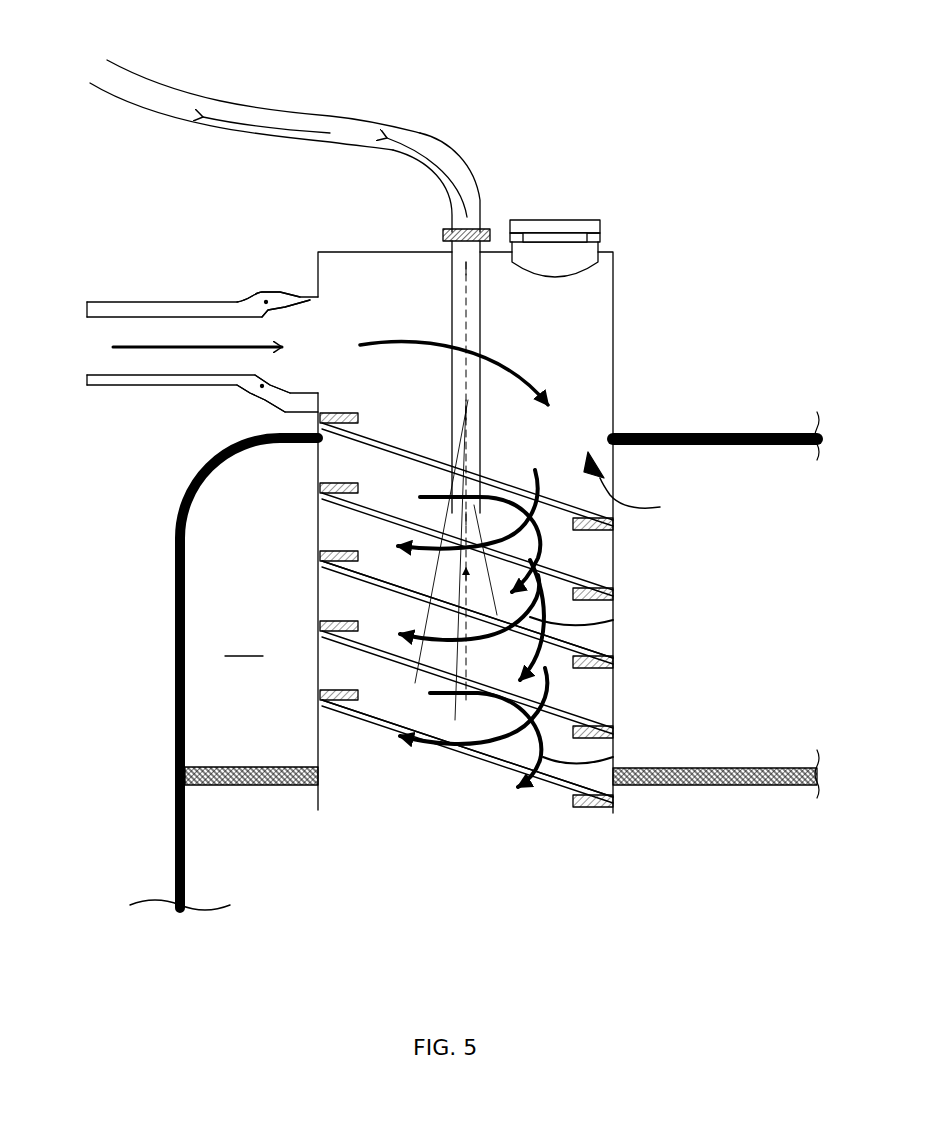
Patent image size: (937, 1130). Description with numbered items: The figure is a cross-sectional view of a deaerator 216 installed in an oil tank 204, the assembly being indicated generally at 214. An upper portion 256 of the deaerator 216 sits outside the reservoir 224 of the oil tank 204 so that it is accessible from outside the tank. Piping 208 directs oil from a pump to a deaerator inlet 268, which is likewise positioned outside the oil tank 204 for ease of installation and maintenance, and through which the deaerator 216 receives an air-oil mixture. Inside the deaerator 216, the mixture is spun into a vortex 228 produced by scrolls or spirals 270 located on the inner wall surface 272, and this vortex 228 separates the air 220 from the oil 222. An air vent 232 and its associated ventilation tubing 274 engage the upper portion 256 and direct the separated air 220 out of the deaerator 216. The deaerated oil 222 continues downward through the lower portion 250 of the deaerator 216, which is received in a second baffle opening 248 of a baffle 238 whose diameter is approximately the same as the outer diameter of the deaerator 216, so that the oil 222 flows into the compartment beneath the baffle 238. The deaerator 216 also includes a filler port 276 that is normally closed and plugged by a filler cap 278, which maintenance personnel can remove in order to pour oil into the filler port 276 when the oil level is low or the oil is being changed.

The fluid separation system 214 is at (706, 70).
The ventilation tubing 274 is at (293, 110).
The air 220 is at (430, 150).
The air vent 232 is at (447, 240).
The filler cap 278 is at (527, 220).
The filler port 276 is at (600, 240).
The deaerator inlet 268 is at (303, 297).
The piping 208 is at (120, 305).
The upper portion 256 is at (615, 345).
The oil tank 204 is at (710, 433).
The inner wall surface 272 is at (641, 487).
The deaerator 216 is at (317, 533).
The scrolls or spirals 270 is at (317, 585).
The vortex 228 is at (600, 532).
The reservoir 224 is at (244, 644).
The oil 222 is at (590, 760).
The second baffle opening 248 is at (213, 847).
The lower portion 250 is at (313, 798).
The baffle 238 is at (750, 785).